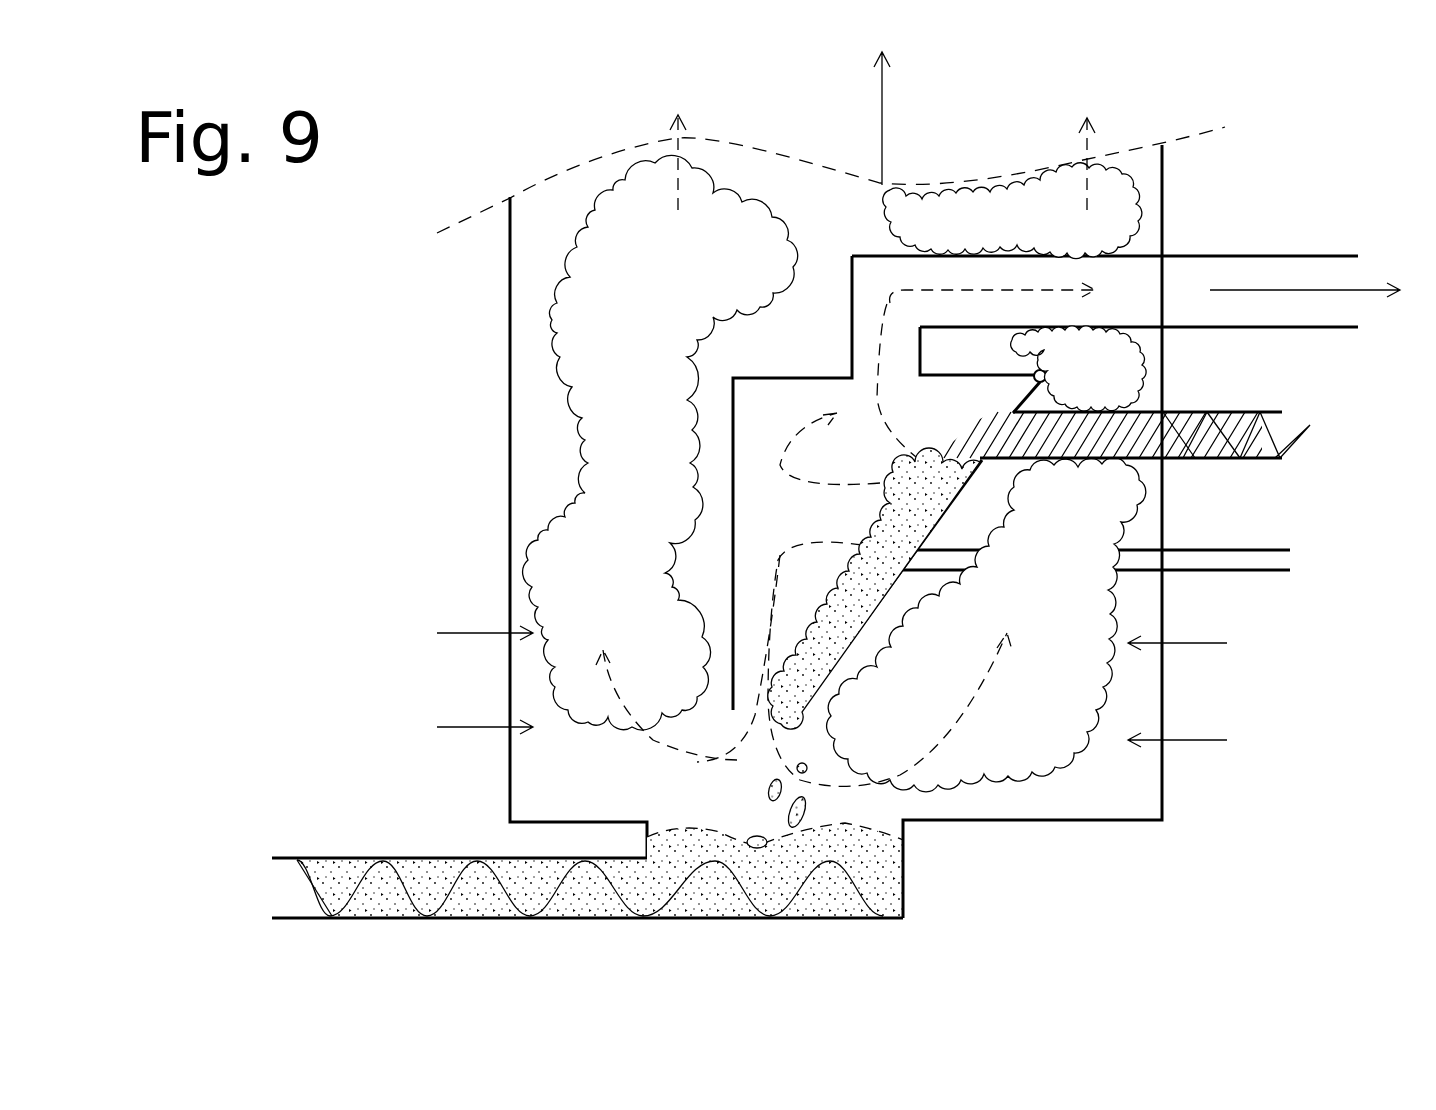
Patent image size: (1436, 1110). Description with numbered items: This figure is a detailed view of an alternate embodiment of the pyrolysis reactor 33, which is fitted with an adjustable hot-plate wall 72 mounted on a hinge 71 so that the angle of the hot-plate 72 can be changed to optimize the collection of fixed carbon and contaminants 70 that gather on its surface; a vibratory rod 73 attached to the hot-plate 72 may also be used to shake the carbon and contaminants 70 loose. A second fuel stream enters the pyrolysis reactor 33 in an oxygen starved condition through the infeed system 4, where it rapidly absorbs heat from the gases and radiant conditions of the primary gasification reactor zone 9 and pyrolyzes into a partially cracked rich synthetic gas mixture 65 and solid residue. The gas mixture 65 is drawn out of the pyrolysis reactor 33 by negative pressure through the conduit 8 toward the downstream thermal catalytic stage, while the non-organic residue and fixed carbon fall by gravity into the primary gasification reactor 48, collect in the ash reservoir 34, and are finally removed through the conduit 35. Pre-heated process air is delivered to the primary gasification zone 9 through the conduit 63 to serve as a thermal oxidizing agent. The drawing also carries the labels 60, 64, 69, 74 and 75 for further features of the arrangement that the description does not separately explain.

The infeed system 4 is at (1333, 444).
The conduit 8 is at (1330, 245).
The primary gasification reactor zone 9 is at (590, 520).
The pyrolysis reactor 33 is at (920, 402).
The ash reservoir 34 is at (366, 855).
The conduit 35 is at (305, 884).
The primary gasification reactor 48 is at (498, 327).
The exhaust air flow 60 is at (877, 92).
The conduit 63 is at (1193, 734).
The rising air flows 64 is at (892, 155).
The partially cracked RG mixture 65 is at (743, 428).
The conveyor screw 69 is at (450, 846).
The fixed carbon and contaminants 70 is at (825, 812).
The hinge 71 is at (1066, 372).
The adjustable hot-plate wall 72 is at (972, 506).
The vibratory rod 73 is at (1240, 582).
The partition wall 74 is at (880, 444).
The recirculating air flow 75 is at (696, 740).